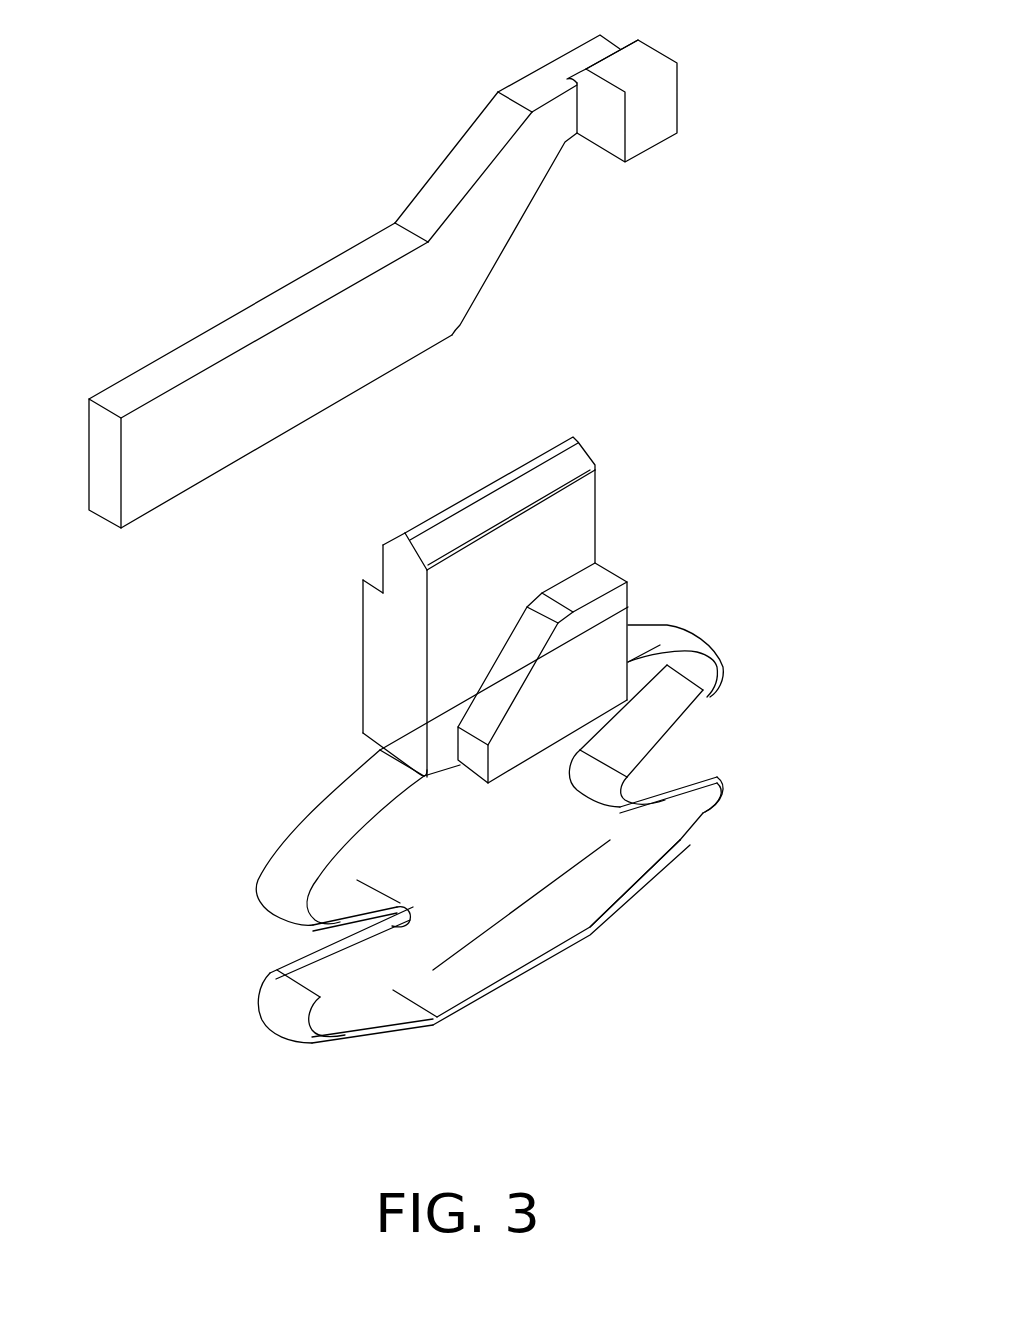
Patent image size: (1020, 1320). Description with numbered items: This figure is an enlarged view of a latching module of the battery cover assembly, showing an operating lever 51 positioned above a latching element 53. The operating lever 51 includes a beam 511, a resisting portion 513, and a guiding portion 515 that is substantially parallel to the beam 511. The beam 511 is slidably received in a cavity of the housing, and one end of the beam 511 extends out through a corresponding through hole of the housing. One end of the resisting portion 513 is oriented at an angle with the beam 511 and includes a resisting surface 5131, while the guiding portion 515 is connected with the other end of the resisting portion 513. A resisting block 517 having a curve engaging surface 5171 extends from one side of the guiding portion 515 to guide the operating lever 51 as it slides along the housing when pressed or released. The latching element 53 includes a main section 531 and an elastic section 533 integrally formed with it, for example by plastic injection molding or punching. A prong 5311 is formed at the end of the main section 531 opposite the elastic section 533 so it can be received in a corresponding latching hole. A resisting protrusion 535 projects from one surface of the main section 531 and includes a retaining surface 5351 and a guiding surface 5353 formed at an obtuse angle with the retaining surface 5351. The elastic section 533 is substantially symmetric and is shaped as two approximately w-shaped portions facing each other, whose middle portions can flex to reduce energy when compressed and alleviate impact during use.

The operating lever 51 is at (285, 252).
The beam 511 is at (257, 372).
The resisting portion 513 is at (498, 192).
The resisting surface 5131 is at (520, 222).
The guiding portion 515 is at (573, 62).
The resisting block 517 is at (650, 62).
The curve engaging surface 5171 is at (570, 78).
The latching element 53 is at (295, 698).
The main section 531 is at (555, 528).
The prong 5311 is at (557, 462).
The elastic section 533 is at (520, 945).
The resisting protrusion 535 is at (792, 532).
The retaining surface 5351 is at (507, 682).
The guiding surface 5353 is at (598, 580).